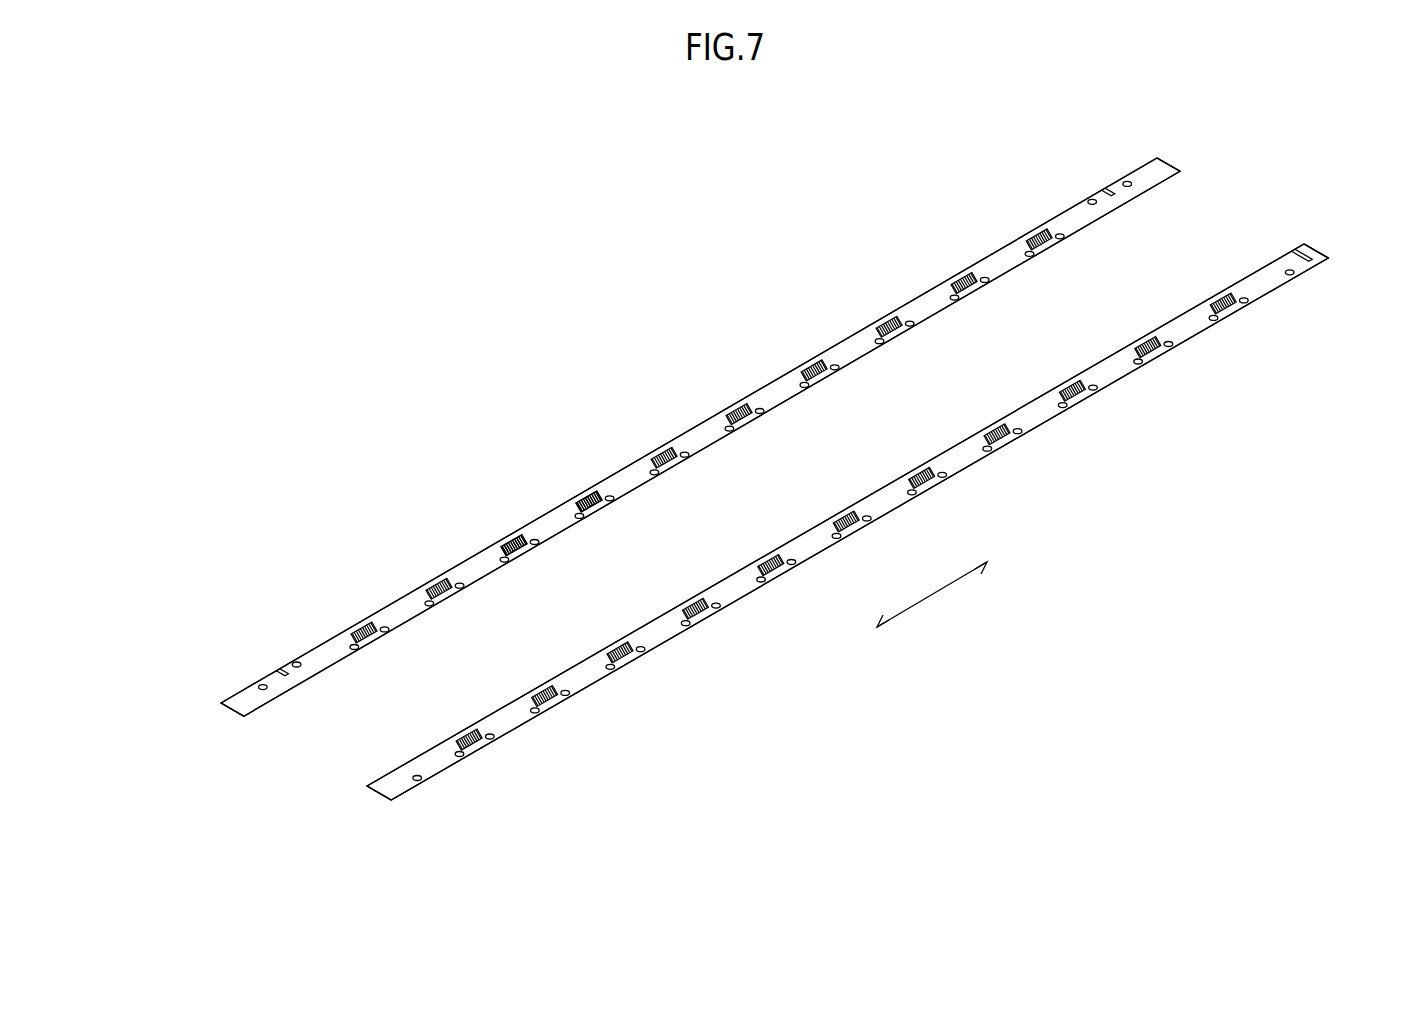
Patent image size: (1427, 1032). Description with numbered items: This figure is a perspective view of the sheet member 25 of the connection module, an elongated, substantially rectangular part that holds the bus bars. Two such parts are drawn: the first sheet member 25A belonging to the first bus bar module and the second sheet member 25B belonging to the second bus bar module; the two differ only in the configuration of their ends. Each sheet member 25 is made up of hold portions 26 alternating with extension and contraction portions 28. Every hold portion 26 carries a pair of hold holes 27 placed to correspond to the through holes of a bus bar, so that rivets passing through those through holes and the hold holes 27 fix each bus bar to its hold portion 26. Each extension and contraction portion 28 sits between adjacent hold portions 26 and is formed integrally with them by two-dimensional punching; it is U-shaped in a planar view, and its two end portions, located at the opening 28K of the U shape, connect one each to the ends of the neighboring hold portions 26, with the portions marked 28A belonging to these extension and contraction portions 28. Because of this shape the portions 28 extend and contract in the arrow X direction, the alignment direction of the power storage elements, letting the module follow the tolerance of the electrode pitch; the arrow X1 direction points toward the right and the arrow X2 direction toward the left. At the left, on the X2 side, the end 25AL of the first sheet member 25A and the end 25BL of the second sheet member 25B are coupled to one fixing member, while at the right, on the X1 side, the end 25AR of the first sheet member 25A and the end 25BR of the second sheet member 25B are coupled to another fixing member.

The sheet member 25 is at (317, 908).
The first sheet member 25A is at (380, 807).
The second sheet member 25B is at (210, 712).
The end on the left side of the first sheet member 25AL is at (390, 780).
The end on the right side of the first sheet member 25AR is at (1313, 253).
The end on the left side of the second sheet member 25BL is at (243, 698).
The end on the right side of the second sheet member 25BR is at (1158, 173).
The hold portion 26 is at (318, 657).
The hold hole 27 is at (373, 620).
The extension and contraction portion 28 is at (377, 642).
The pad edge portion 28A is at (512, 532).
The opening 28K is at (568, 488).
The arrow X direction X is at (932, 598).
The arrow X1 direction X1 is at (995, 558).
The arrow X2 direction X2 is at (868, 634).